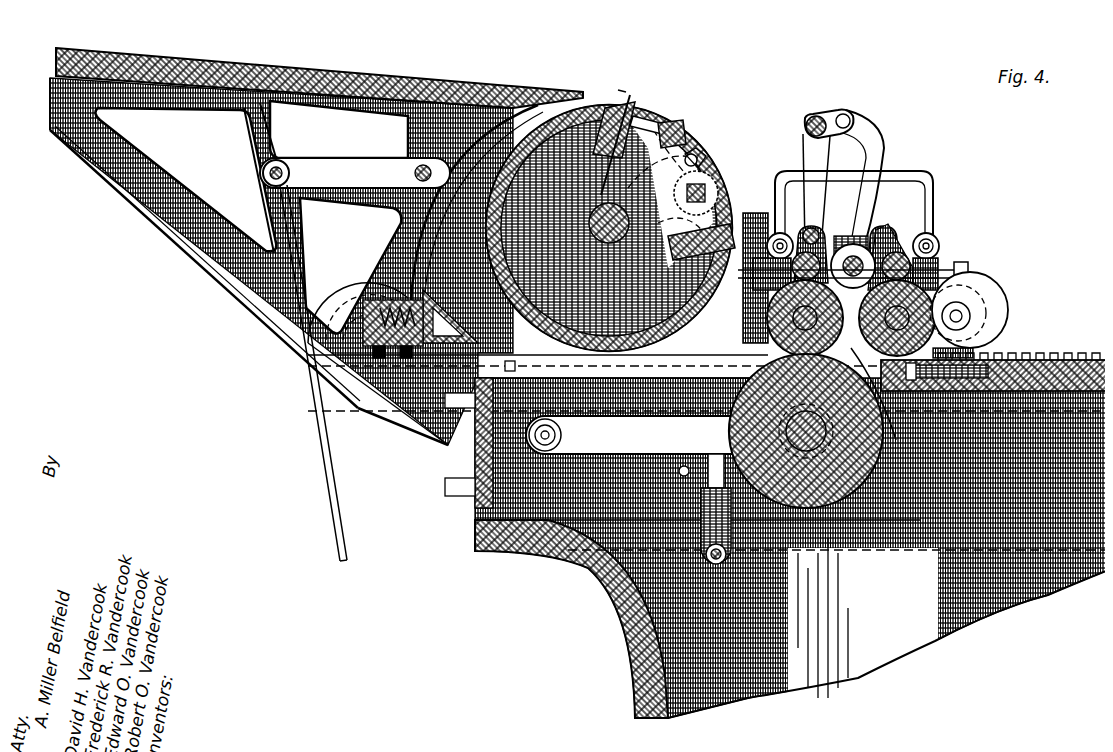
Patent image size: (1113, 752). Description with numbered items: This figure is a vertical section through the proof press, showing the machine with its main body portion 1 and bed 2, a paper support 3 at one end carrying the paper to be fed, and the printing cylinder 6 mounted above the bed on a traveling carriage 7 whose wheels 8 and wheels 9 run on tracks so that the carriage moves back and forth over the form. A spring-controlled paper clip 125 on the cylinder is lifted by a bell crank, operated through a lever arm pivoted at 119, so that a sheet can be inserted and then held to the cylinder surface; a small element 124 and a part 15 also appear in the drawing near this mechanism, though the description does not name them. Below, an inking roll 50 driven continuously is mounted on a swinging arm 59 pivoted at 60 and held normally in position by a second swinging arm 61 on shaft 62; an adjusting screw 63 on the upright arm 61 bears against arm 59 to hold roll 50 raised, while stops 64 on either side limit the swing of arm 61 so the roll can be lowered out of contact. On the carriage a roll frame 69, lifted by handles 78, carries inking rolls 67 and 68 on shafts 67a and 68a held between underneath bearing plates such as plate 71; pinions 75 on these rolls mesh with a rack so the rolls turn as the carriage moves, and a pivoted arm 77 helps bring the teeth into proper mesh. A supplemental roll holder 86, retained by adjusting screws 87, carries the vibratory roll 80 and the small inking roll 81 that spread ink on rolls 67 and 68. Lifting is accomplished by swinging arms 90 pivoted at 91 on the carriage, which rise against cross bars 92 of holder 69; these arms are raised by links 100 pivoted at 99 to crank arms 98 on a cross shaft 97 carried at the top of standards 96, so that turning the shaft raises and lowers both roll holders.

The main body portion 1 is at (617, 685).
The bed 2 is at (1082, 348).
The paper support 3 is at (424, 80).
The printing cylinder 6 is at (650, 120).
The traveling carriage 7 is at (447, 282).
The wheels 8 is at (347, 272).
The wheels 9 is at (985, 302).
The roller arm 15 is at (806, 222).
The inking roll 50 is at (866, 470).
The swinging arm 59 is at (648, 410).
The pivot 60 is at (553, 427).
The second swinging arm 61 is at (722, 490).
The shaft 62 is at (718, 552).
The adjusting screw 63 is at (699, 452).
The stops 64 is at (676, 469).
The inking roll 67 is at (758, 325).
The shaft 67a is at (800, 350).
The inking roll 68 is at (965, 343).
The shaft 68a is at (972, 290).
The roll frame 69 is at (940, 252).
The plate 71 is at (878, 426).
The pinions 75 is at (985, 320).
The pivoted arm 77 is at (1085, 347).
The handles 78 is at (893, 168).
The vibratory roll 80 is at (872, 223).
The inking roll 81 is at (883, 236).
The supplemental roll holder 86 is at (884, 220).
The adjusting screws 87 is at (962, 258).
The swinging arms 90 is at (678, 232).
The pivot 91 is at (470, 250).
The cross bars 92 is at (768, 232).
The standards 96 is at (800, 148).
The cross shaft 97 is at (798, 118).
The crank arms 98 is at (818, 108).
The pivot 99 is at (840, 110).
The links 100 is at (870, 127).
The pivot 119 is at (425, 170).
The bracket 124 is at (676, 152).
The paper clip 125 is at (614, 94).